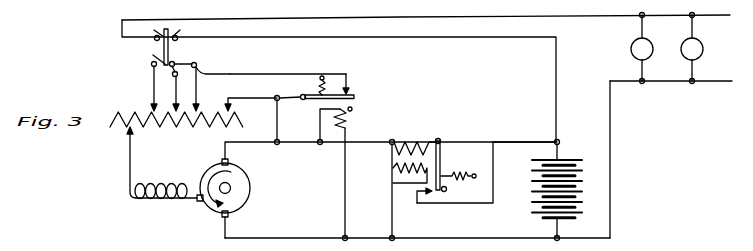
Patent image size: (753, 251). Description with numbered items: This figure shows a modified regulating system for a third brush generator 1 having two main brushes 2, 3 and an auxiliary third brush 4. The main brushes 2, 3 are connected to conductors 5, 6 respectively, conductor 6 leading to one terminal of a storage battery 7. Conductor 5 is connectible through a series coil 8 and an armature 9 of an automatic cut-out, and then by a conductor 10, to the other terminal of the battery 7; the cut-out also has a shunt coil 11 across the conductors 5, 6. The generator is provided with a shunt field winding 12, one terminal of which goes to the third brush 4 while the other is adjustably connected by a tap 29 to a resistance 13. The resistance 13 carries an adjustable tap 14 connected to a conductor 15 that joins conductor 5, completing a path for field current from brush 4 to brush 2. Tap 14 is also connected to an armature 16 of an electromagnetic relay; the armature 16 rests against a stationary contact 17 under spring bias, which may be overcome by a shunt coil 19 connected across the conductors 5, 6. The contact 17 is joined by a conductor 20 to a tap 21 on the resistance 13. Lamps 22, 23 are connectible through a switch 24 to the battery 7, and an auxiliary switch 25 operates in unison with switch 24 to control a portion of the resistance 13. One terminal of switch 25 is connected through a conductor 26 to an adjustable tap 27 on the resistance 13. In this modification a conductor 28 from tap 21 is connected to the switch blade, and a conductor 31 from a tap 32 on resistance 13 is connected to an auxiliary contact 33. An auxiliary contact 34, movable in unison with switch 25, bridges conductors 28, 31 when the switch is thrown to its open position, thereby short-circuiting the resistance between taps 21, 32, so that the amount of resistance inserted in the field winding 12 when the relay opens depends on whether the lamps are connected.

The third brush generator 1 is at (249, 189).
The main brush 2 is at (229, 162).
The main brush 3 is at (229, 216).
The third brush 4 is at (198, 203).
The conductor 5 is at (280, 145).
The conductor 6 is at (317, 237).
The storage battery 7 is at (531, 196).
The series coil 8 is at (413, 141).
The armature 9 is at (442, 146).
The conductor 10 is at (517, 142).
The shunt coil 11 is at (392, 178).
The shunt field winding 12 is at (153, 200).
The resistance 13 is at (172, 129).
The adjustable tap 14 is at (236, 100).
The conductor 15 is at (278, 133).
The armature 16 is at (355, 97).
The stationary contact 17 is at (347, 74).
The shunt coil 19 is at (349, 123).
The conductor 20 is at (288, 74).
The tap 21 is at (177, 100).
The lamp 22 is at (631, 50).
The lamp 23 is at (703, 46).
The switch 24 is at (174, 36).
The auxiliary switch 25 is at (152, 57).
The conductor 26 is at (151, 65).
The adjustable tap 27 is at (153, 108).
The conductor 28 is at (169, 74).
The tap 29 is at (128, 157).
The conductor 31 is at (221, 64).
The tap 32 is at (205, 96).
The auxiliary contact 33 is at (199, 63).
The auxiliary contact 34 is at (184, 63).